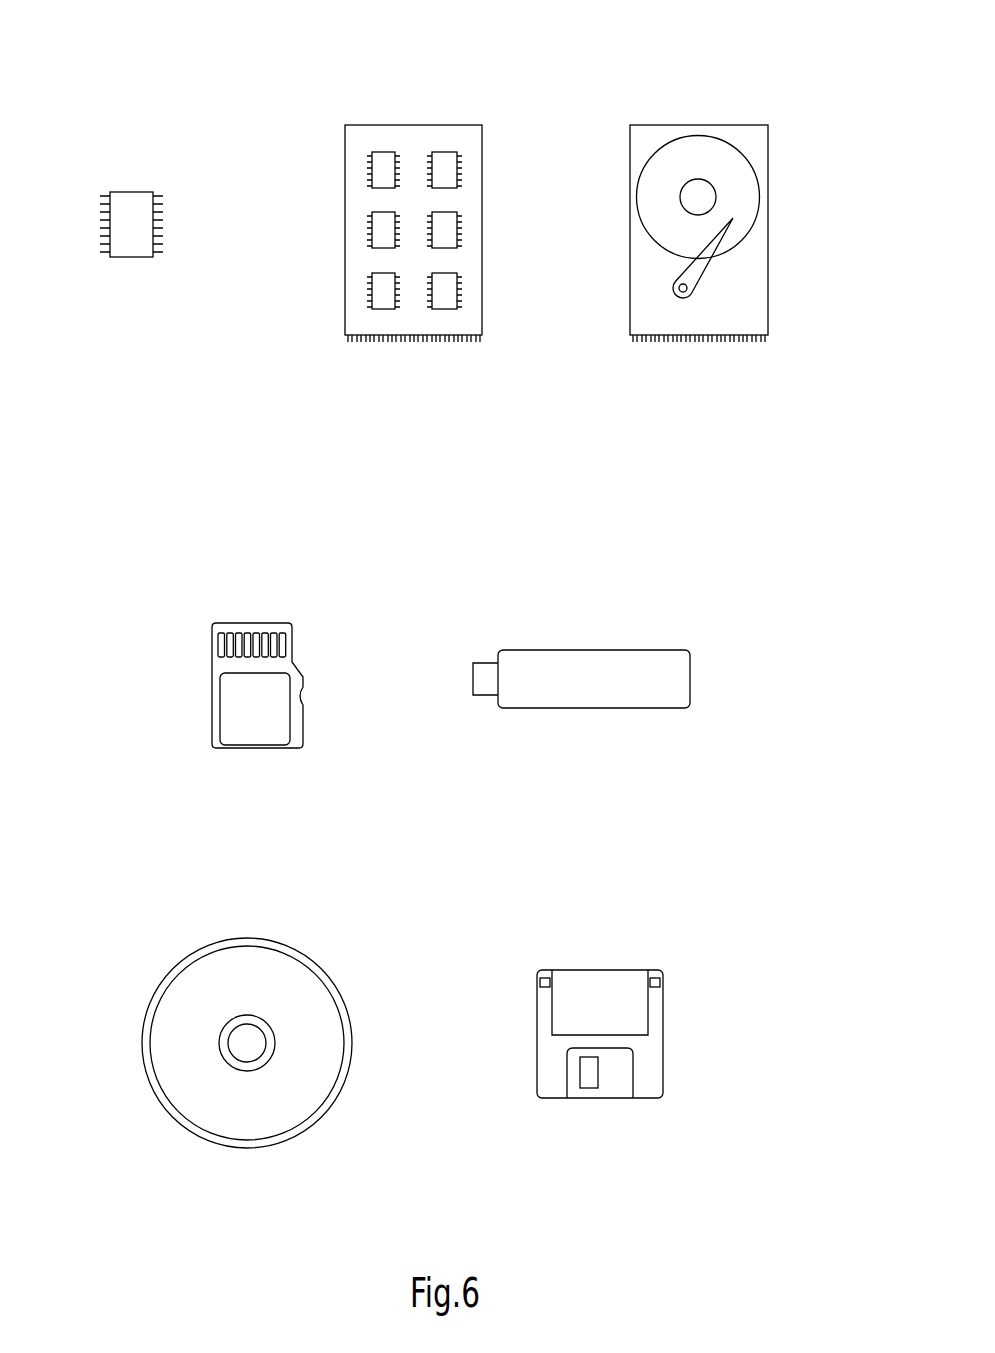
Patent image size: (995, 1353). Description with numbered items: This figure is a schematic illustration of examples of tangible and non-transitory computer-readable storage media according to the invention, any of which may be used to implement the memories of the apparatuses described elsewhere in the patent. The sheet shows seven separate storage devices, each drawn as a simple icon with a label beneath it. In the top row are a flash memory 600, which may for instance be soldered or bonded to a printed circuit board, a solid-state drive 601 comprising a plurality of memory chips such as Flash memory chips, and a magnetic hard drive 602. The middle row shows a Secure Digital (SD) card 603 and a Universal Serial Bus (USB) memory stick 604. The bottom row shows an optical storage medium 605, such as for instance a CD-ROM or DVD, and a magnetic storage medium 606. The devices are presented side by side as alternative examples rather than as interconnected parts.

The flash memory 600 is at (163, 142).
The solid-state drive 601 is at (491, 77).
The magnetic hard drive 602 is at (779, 77).
The Secure Digital (SD) card 603 is at (303, 580).
The Universal Serial Bus (USB) memory stick 604 is at (671, 602).
The optical storage medium 605 is at (338, 923).
The magnetic storage medium 606 is at (665, 922).